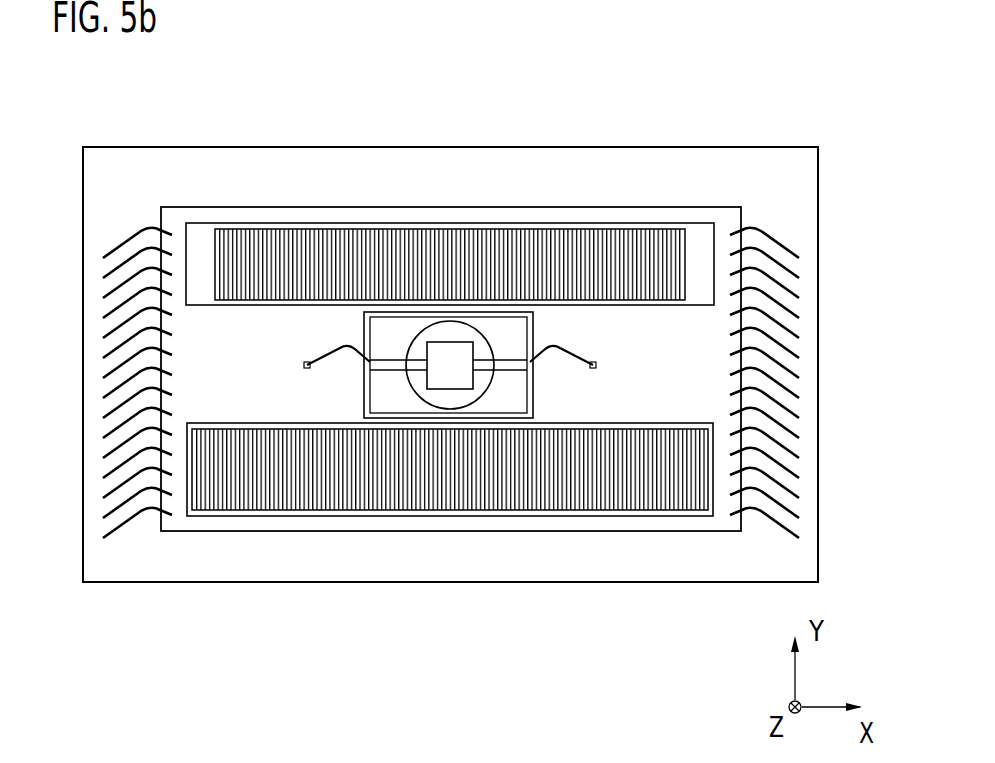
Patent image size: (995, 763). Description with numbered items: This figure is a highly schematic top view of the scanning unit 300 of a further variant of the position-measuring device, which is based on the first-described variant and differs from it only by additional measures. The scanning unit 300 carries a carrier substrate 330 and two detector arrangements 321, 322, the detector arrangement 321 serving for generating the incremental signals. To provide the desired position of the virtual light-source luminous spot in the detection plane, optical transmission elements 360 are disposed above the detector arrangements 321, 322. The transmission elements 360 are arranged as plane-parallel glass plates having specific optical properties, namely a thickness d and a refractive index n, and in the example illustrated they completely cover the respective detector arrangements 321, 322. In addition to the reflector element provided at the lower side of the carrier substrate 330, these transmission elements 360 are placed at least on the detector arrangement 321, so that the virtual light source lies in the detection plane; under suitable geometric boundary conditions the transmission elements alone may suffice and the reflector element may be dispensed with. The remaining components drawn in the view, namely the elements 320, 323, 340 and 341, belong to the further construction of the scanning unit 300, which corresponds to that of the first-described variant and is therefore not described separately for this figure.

The scanning unit 300 is at (87, 594).
The carrier substrate 320 is at (182, 217).
The detector arrangement 321 is at (332, 250).
The detector arrangement 322 is at (287, 508).
The bent spring contacts 323 is at (140, 230).
The carrier substrate 330 is at (510, 340).
The semiconductor chip 340 is at (451, 365).
The bond wires 341 is at (328, 353).
The optical transmission elements 360 is at (678, 228).